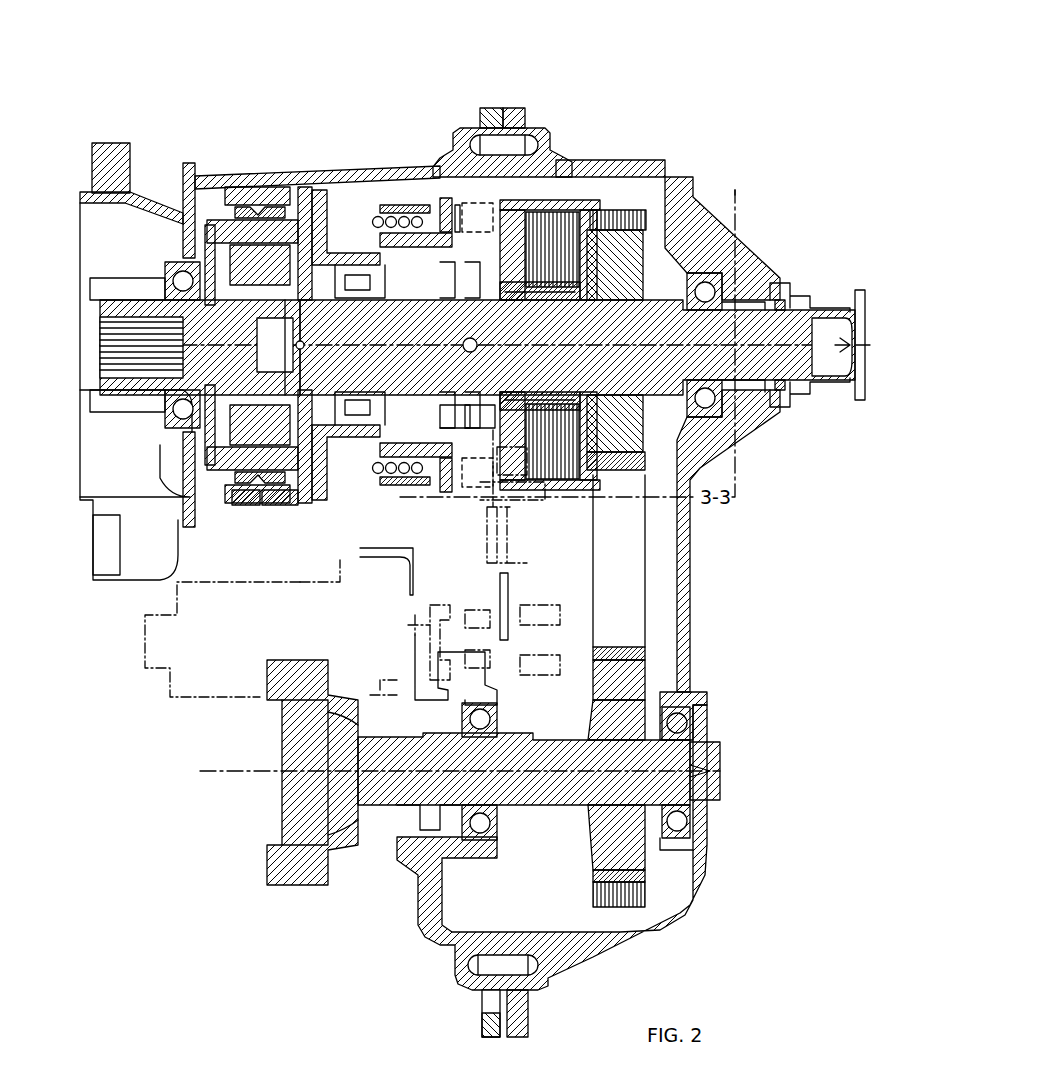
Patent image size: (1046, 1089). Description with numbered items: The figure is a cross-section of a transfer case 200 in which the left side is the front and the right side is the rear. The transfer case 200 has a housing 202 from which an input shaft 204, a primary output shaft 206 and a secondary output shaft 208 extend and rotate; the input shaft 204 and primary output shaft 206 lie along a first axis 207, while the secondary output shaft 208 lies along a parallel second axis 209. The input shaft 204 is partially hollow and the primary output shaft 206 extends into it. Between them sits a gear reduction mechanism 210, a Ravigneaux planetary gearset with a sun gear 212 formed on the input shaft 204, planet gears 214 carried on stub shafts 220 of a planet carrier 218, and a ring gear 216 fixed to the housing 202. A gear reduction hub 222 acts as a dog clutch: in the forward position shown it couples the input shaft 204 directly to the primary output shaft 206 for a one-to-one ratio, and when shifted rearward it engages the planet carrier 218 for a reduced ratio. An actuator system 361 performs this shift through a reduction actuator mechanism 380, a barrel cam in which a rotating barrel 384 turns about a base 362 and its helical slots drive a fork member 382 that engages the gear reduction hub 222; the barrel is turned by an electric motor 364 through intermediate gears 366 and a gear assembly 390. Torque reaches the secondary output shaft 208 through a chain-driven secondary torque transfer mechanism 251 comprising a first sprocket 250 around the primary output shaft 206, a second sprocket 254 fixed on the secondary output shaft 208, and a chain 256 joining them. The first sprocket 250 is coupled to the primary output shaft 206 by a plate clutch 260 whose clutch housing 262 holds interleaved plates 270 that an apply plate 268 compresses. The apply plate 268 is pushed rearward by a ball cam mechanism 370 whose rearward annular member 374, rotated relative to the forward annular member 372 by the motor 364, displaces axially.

The transfer case 200 is at (792, 112).
The housing 202 is at (677, 182).
The input shaft 204 is at (123, 362).
The primary output shaft 206 is at (737, 335).
The first axis 207 is at (813, 330).
The secondary output shaft 208 is at (320, 757).
The second axis 209 is at (718, 771).
The gear reduction mechanism 210 is at (175, 118).
The sun gear 212 is at (183, 247).
The planet gears 214 is at (240, 185).
The ring gear 216 is at (262, 187).
The planet carrier 218 is at (293, 178).
The stub shafts 220 is at (200, 225).
The gear reduction hub 222 is at (180, 325).
The first sprocket 250 is at (600, 205).
The secondary torque transfer mechanism 251 is at (463, 197).
The second sprocket 254 is at (640, 715).
The chain 256 is at (640, 902).
The plate clutch 260 is at (720, 100).
The clutch housing 262 is at (592, 222).
The apply plate 268 is at (562, 240).
The interleaved plates 270 is at (640, 213).
The actuator system 361 is at (402, 84).
The base 362 is at (347, 215).
The electric motor 364 is at (235, 670).
The intermediate gears 366 is at (505, 592).
The ball cam mechanism 370 is at (132, 752).
The forward annular member 372 is at (462, 425).
The rearward annular member 374 is at (478, 432).
The reduction actuator mechanism 380 is at (98, 680).
The fork member 382 is at (232, 505).
The rotating barrel 384 is at (278, 510).
The gear assembly 390 is at (520, 205).